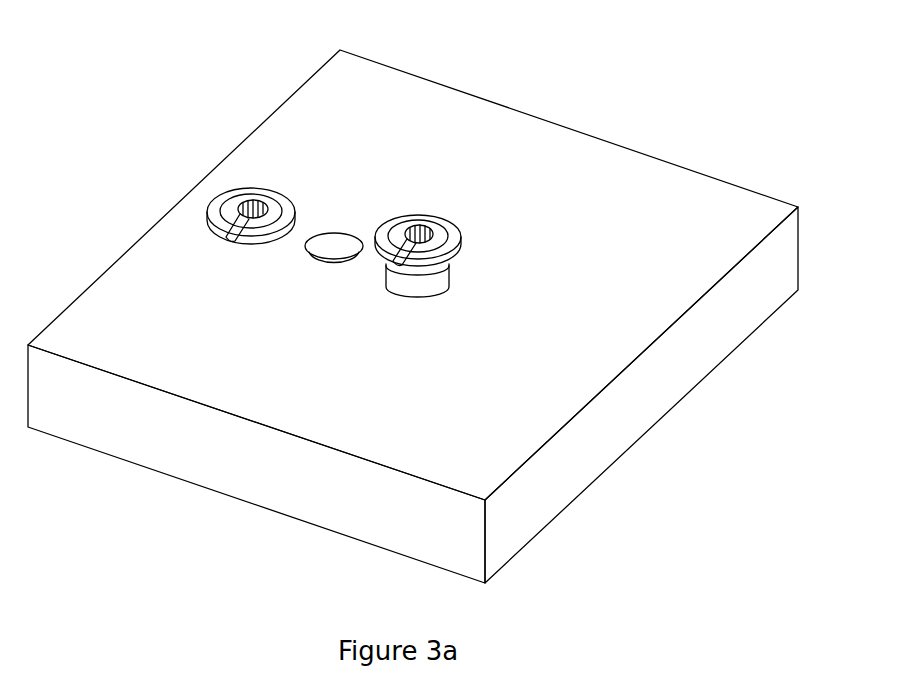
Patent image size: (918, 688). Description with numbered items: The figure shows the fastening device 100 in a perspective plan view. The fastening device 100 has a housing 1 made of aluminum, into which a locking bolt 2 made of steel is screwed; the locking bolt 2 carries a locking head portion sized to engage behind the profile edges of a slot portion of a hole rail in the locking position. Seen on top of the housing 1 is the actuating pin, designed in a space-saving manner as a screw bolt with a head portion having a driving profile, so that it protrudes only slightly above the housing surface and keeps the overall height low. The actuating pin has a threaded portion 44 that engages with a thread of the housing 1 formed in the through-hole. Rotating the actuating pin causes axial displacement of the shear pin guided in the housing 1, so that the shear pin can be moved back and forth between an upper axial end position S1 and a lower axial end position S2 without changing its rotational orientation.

The fastening device 100 is at (152, 99).
The housing 1 is at (693, 217).
The locking bolt 2 is at (336, 203).
The threaded portion 44 is at (443, 277).
The upper axial end position S1 is at (484, 161).
The lower axial end position S2 is at (269, 82).